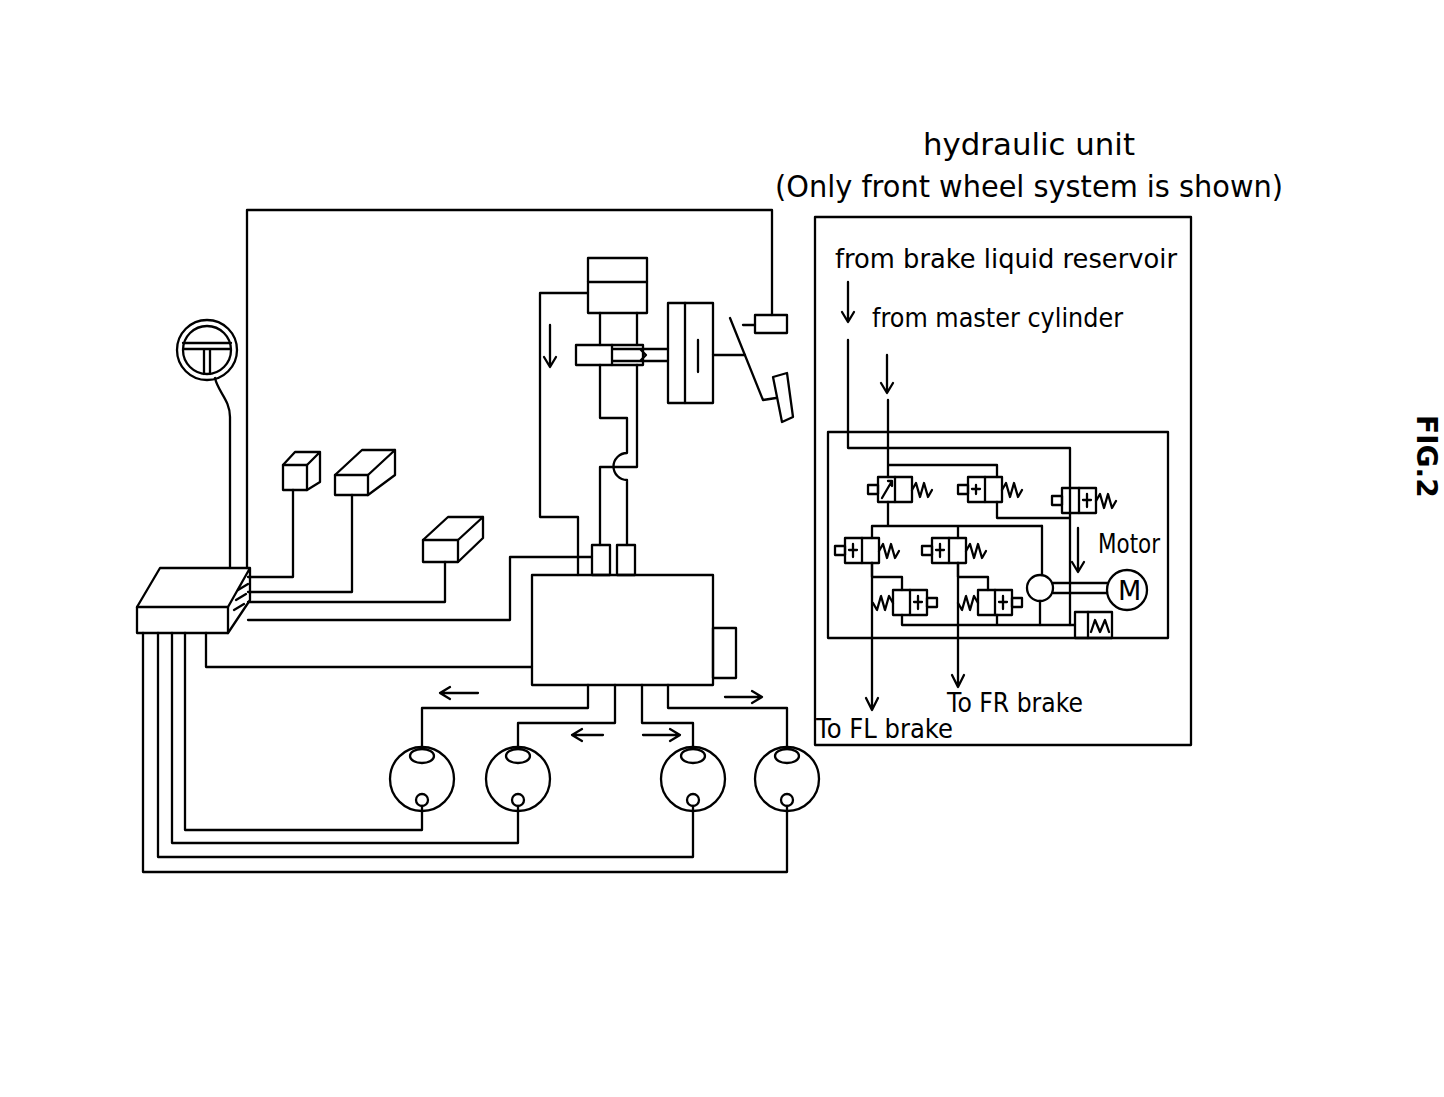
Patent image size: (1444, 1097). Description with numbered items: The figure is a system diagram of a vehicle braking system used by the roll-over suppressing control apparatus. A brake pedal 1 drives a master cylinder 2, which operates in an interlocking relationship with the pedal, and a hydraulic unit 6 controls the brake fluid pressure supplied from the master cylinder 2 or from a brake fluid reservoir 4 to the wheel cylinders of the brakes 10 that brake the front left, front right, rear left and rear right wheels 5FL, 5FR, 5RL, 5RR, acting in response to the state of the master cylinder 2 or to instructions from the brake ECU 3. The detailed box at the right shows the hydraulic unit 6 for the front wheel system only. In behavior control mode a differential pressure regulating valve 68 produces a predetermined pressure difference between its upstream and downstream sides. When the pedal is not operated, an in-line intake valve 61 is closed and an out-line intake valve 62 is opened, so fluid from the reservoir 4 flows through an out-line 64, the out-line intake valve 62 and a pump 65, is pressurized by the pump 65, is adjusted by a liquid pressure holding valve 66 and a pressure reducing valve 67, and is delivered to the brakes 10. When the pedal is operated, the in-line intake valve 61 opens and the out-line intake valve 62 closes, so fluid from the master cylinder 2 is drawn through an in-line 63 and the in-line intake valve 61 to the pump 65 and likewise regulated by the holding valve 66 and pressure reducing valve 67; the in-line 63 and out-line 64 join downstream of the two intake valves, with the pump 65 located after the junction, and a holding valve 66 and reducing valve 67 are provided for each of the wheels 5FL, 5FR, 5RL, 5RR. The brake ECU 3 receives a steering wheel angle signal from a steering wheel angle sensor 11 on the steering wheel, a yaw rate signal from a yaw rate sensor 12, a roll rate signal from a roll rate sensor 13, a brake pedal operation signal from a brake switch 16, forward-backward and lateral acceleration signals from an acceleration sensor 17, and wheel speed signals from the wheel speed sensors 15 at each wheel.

The brake pedal 1 is at (785, 420).
The master cylinder 2 is at (650, 366).
The braking controller (brake ECU) 3 is at (232, 633).
The brake fluid reservoir 4 is at (588, 265).
The hydraulic unit 6 is at (695, 575).
The wheel brake 10 is at (418, 748).
The steering wheel angle sensor 11 is at (195, 330).
The yaw rate sensor 12 is at (372, 462).
The roll rate sensor 13 is at (450, 518).
The wheel speed sensor 15 is at (415, 798).
The brake switch 16 is at (777, 315).
The forward-backward and lateral acceleration sensor 17 is at (302, 463).
The front left wheel 5FL is at (370, 784).
The front right wheel 5FR is at (562, 793).
The rear left wheel 5RL is at (661, 812).
The rear right wheel 5RR is at (822, 815).
The in-line intake valve 61 is at (980, 476).
The out-line intake valve 62 is at (1082, 487).
The in-line 63 is at (603, 420).
The out-line 64 is at (540, 318).
The pump 65 is at (1038, 603).
The liquid pressure holding valve 66 is at (852, 565).
The pressure reducing valve 67 is at (905, 617).
The differential pressure regulating valve 68 is at (905, 476).